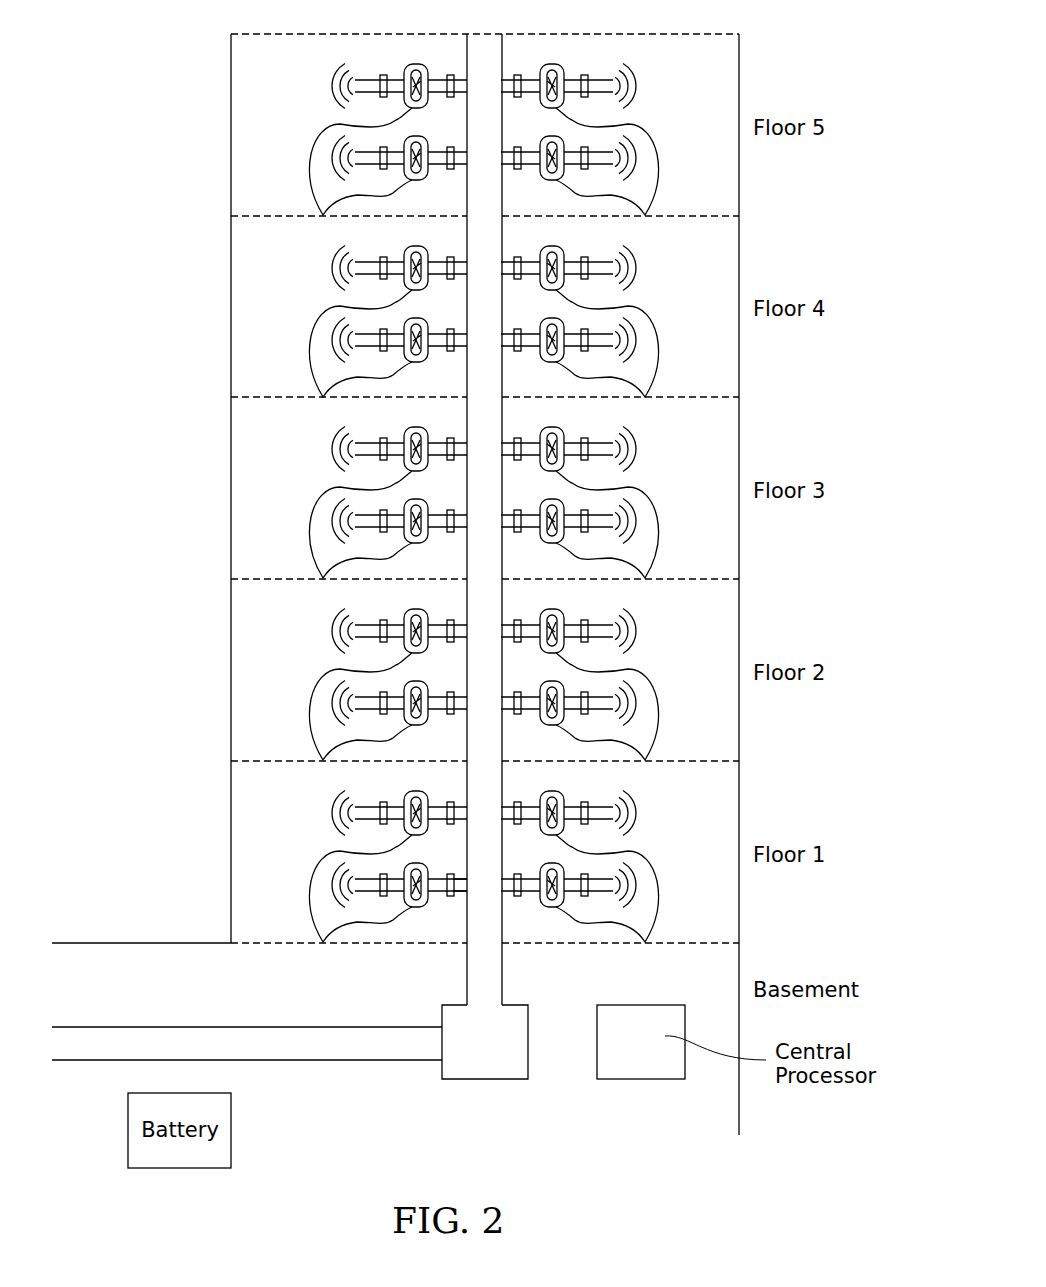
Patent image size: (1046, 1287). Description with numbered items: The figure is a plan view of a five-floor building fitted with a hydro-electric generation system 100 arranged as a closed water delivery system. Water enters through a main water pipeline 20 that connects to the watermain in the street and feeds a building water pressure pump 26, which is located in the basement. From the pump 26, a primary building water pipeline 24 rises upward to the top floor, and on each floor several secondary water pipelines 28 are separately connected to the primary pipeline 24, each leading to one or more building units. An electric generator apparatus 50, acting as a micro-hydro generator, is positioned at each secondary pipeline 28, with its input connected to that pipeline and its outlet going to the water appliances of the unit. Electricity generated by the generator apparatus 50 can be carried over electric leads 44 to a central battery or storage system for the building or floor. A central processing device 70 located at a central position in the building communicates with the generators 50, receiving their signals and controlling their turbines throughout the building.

The hydro-electric generation system 100 is at (276, 58).
The electric generator apparatus 50 is at (285, 455).
The electric leads 44 is at (306, 538).
The primary building water pipeline 24 is at (503, 972).
The building water pressure pump 26 is at (510, 1037).
The main water pipeline 20 is at (251, 1044).
The secondary water pipeline 28 is at (462, 883).
The central processing device 70 is at (635, 1055).